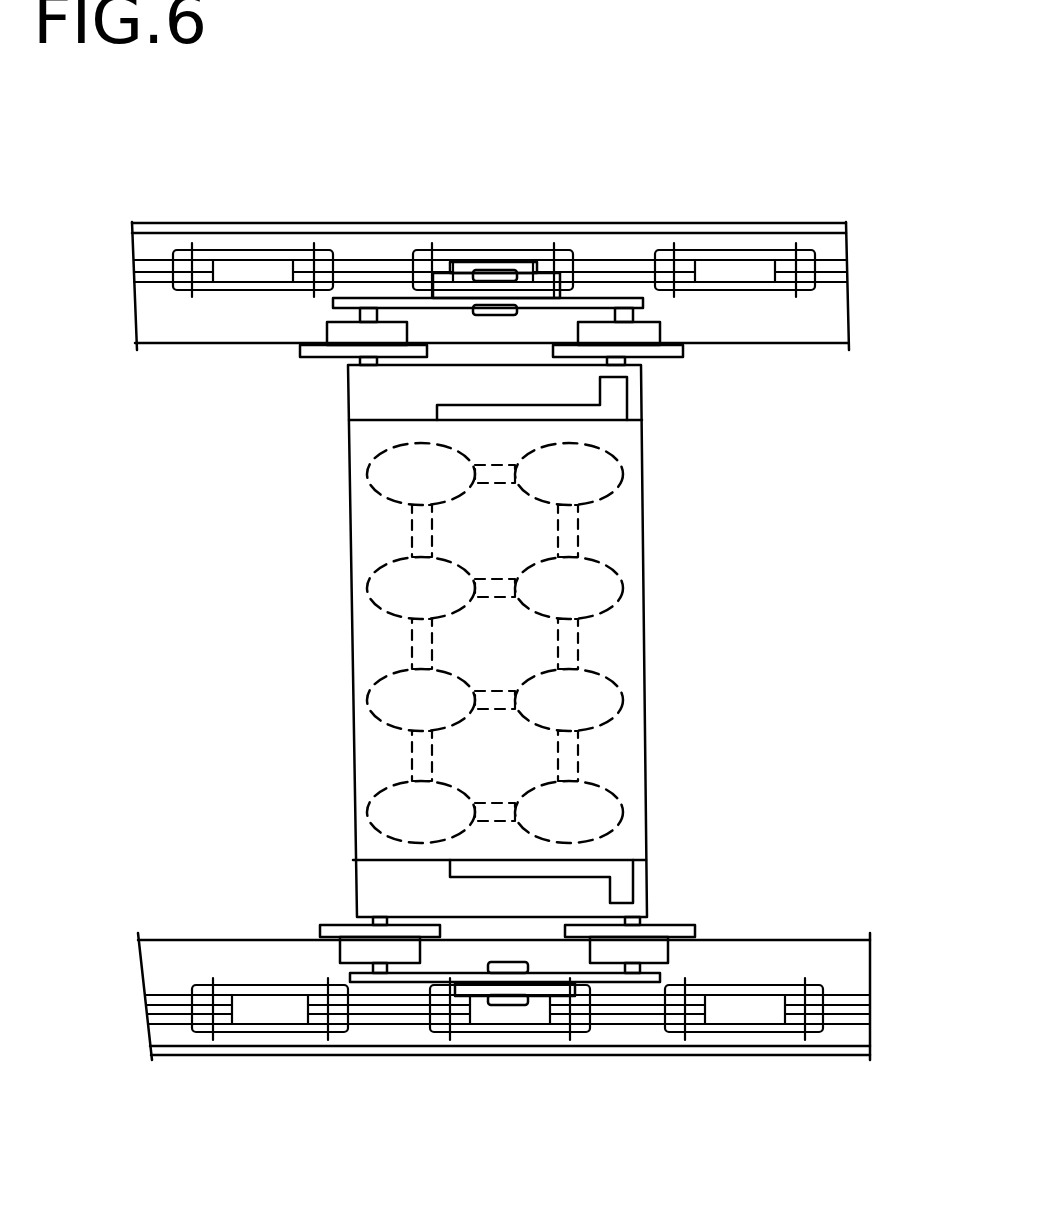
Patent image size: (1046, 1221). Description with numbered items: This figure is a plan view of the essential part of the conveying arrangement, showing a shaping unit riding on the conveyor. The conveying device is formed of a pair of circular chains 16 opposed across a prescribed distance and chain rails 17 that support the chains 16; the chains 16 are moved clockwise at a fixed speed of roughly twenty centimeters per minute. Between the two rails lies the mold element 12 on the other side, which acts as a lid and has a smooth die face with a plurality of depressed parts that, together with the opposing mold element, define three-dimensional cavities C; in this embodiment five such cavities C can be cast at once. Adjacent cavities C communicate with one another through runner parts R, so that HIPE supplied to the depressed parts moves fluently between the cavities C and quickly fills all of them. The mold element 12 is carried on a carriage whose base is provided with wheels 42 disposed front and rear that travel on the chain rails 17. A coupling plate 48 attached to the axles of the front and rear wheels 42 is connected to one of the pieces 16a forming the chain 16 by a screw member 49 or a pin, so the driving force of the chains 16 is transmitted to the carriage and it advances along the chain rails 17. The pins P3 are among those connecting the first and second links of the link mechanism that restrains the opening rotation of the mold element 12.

The mold element on the other side 12 is at (350, 605).
The chain 16 is at (742, 1027).
The piece forming the chain 16a is at (542, 993).
The chain rail 17 is at (825, 1053).
The wheel 42 is at (372, 952).
The coupling plate 48 is at (550, 975).
The screw member 49 is at (507, 1003).
The pin P3 is at (613, 390).
The cavity C is at (617, 477).
The runner part R is at (558, 532).